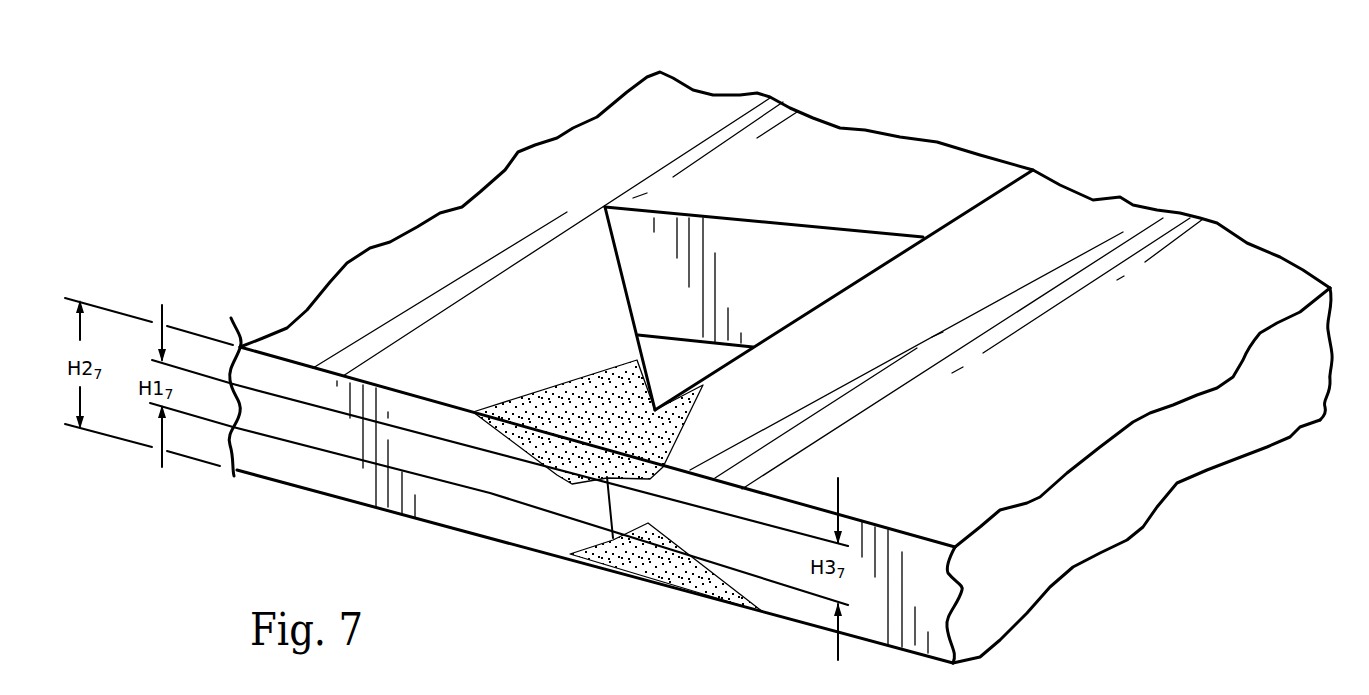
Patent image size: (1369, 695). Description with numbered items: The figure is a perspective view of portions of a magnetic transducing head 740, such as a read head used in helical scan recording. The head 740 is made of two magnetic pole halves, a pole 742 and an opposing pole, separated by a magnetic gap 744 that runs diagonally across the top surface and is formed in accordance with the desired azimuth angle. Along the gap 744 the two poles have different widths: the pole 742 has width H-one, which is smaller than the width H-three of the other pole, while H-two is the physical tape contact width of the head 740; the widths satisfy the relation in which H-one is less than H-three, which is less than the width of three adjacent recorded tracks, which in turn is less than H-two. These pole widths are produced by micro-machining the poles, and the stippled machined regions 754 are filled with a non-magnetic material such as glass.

The magnetic transducing head 740 is at (1143, 120).
The pole half 742 is at (1090, 213).
The magnetic gap 744 is at (910, 173).
The machined regions 754 is at (573, 402).